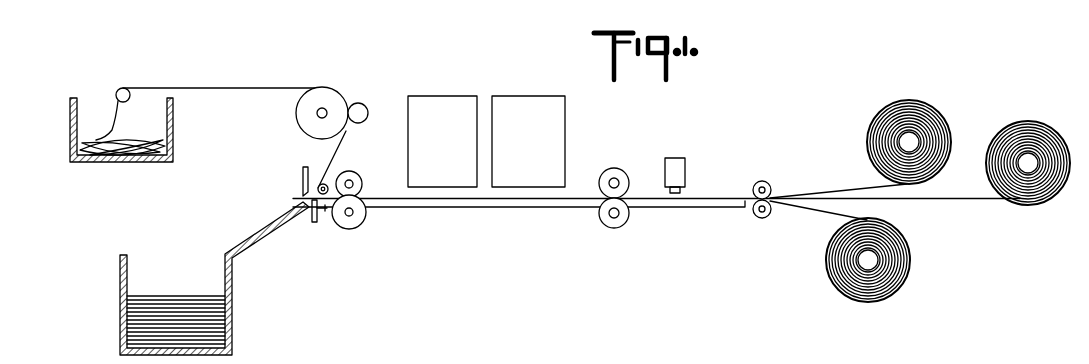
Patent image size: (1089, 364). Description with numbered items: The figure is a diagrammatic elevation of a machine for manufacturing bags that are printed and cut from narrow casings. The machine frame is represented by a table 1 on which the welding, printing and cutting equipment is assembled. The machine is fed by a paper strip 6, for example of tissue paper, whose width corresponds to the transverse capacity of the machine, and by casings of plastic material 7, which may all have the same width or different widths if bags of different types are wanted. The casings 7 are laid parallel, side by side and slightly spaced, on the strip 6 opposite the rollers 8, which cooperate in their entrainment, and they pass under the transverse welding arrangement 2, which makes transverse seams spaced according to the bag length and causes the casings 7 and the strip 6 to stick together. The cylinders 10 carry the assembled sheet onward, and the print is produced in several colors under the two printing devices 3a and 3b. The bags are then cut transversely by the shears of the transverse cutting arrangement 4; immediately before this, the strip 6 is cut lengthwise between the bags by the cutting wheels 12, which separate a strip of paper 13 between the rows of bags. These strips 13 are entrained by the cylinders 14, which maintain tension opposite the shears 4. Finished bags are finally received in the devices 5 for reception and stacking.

The table 1 is at (468, 209).
The transverse welding arrangement 2 is at (677, 174).
The printing device 3a is at (522, 98).
The printing device 3b is at (427, 100).
The transverse cutting arrangement 4 is at (302, 169).
The reception and stacking devices 5 is at (261, 238).
The paper strip 6 is at (837, 217).
The casings of plastic material 7 is at (843, 170).
The rollers 8 is at (766, 179).
The cylinders 10 is at (617, 167).
The cutting wheels 12 is at (360, 176).
The strip of paper 13 is at (224, 89).
The cylinders 14 is at (364, 103).